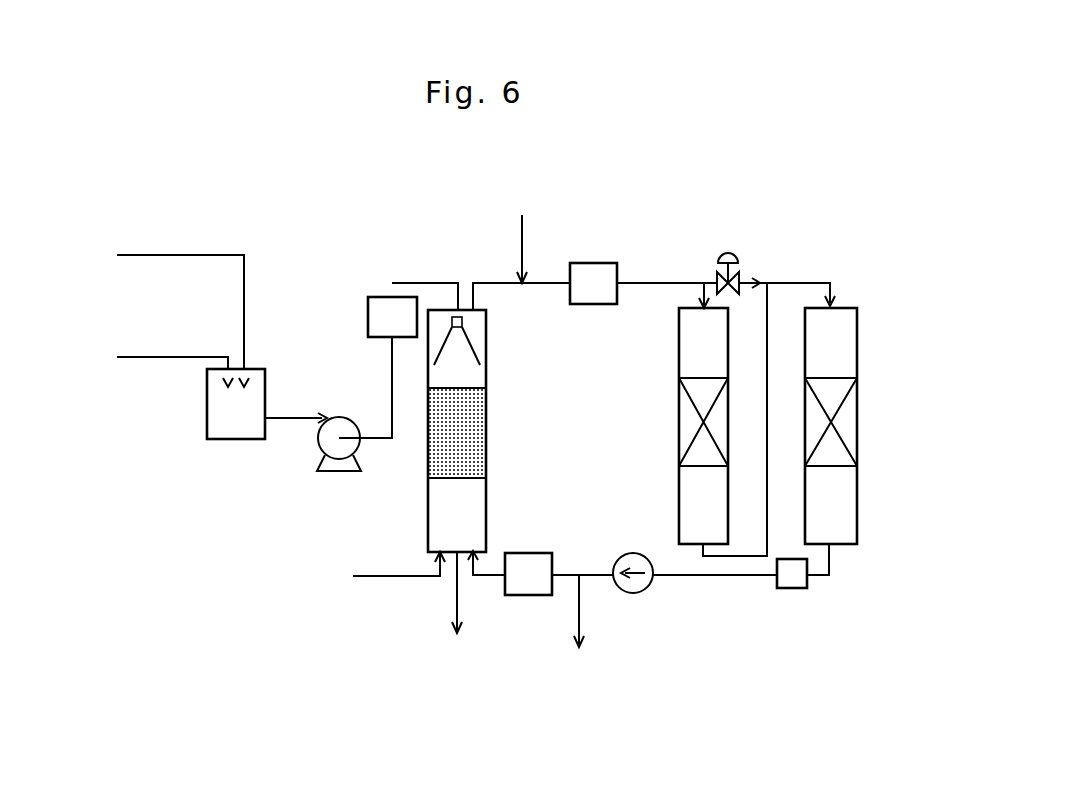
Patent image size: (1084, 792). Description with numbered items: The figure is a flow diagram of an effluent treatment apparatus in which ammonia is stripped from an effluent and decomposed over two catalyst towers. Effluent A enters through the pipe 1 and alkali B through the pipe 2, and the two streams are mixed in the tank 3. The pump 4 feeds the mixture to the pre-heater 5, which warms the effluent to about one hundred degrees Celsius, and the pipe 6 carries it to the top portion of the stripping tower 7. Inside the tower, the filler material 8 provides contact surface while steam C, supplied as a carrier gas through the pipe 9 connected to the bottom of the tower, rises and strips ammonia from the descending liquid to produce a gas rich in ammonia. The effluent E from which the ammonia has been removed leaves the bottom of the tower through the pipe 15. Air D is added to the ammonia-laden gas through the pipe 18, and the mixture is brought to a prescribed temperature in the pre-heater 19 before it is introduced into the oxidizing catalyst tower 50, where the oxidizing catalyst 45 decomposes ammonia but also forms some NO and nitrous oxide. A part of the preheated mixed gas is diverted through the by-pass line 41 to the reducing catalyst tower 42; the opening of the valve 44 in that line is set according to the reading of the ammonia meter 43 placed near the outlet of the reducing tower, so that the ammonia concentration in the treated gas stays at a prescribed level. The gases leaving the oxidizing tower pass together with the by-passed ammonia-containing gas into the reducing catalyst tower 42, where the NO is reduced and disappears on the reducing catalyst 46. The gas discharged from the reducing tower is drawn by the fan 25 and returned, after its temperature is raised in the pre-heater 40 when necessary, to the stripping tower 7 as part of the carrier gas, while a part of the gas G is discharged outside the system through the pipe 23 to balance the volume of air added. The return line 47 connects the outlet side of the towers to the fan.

The pipe 1 is at (140, 357).
The pipe 2 is at (160, 255).
The tank 3 is at (223, 440).
The pump 4 is at (327, 472).
The pre-heater 5 is at (368, 312).
The pipe 6 is at (420, 283).
The stripping tower 7 is at (486, 345).
The filler material 8 is at (486, 440).
The pipe 9 is at (404, 576).
The pipe 15 is at (452, 616).
The pipe 18 is at (517, 232).
The pre-heater 19 is at (598, 263).
The pipe 23 is at (585, 614).
The fan 25 is at (633, 553).
The pre-heater 40 is at (525, 553).
The by-pass line 41 is at (706, 281).
The reducing catalyst tower 42 is at (857, 360).
The ammonia meter 43 is at (792, 589).
The valve 44 is at (732, 253).
The oxidizing catalyst 45 is at (683, 425).
The reducing catalyst 46 is at (847, 422).
The return line 47 is at (707, 576).
The oxidizing catalyst tower 50 is at (679, 340).